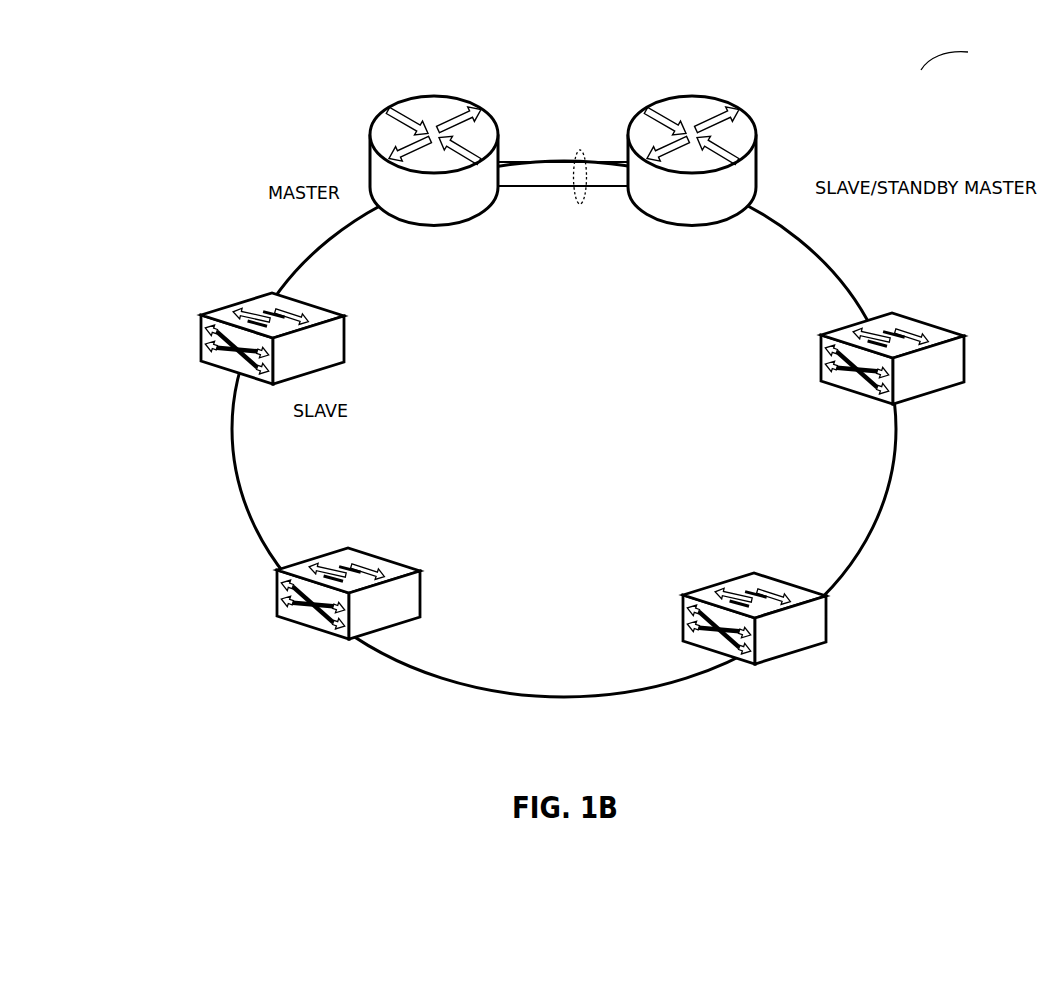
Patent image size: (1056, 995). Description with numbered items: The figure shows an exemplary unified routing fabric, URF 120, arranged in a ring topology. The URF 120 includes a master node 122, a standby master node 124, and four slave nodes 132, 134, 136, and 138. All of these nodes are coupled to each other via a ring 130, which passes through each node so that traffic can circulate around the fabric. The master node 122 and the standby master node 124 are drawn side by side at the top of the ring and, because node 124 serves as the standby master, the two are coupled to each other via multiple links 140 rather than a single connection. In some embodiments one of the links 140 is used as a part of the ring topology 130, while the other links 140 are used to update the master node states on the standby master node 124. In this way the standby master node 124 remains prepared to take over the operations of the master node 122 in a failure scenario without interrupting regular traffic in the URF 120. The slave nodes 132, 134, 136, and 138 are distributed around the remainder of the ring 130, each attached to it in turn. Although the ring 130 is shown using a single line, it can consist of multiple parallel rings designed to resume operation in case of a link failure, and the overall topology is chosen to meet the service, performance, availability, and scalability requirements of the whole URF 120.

The URF 120 is at (966, 52).
The master node 122 is at (497, 151).
The standby master node 124 is at (755, 141).
The ring 130 is at (297, 263).
The slave node 132 is at (221, 311).
The slave node 134 is at (276, 617).
The slave node 136 is at (755, 663).
The slave node 138 is at (917, 396).
The links 140 is at (580, 204).